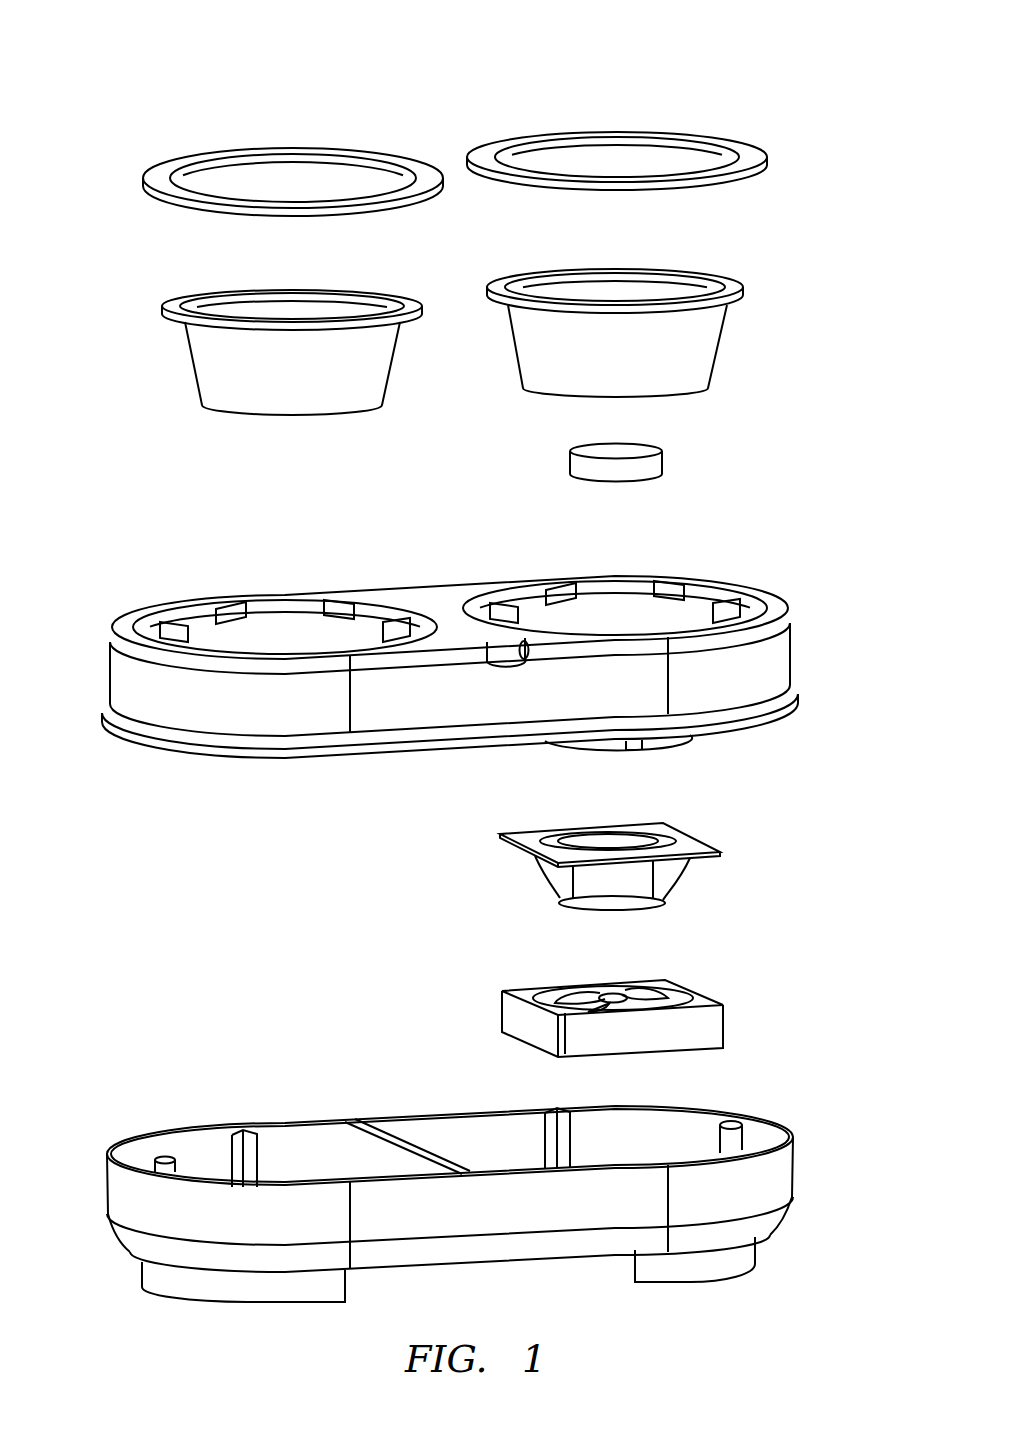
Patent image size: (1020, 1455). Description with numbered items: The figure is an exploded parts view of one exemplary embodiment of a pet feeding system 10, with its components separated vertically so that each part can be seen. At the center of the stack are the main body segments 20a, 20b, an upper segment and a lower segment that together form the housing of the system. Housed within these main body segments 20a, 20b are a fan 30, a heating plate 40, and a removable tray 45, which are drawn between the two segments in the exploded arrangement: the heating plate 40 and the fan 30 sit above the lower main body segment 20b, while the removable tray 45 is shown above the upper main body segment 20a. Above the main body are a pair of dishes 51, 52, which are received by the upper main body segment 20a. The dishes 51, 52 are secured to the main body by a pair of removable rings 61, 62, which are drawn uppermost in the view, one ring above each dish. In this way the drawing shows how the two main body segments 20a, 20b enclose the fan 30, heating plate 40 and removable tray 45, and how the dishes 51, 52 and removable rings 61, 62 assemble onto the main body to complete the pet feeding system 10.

The pet feeding system 10 is at (122, 82).
The main body segment 20a is at (798, 658).
The main body segment 20b is at (800, 1178).
The fan 30 is at (738, 1025).
The heating plate 40 is at (694, 885).
The removable tray 45 is at (669, 459).
The dish 51 is at (728, 342).
The dish 52 is at (165, 357).
The removable ring 61 is at (779, 162).
The removable ring 62 is at (134, 185).